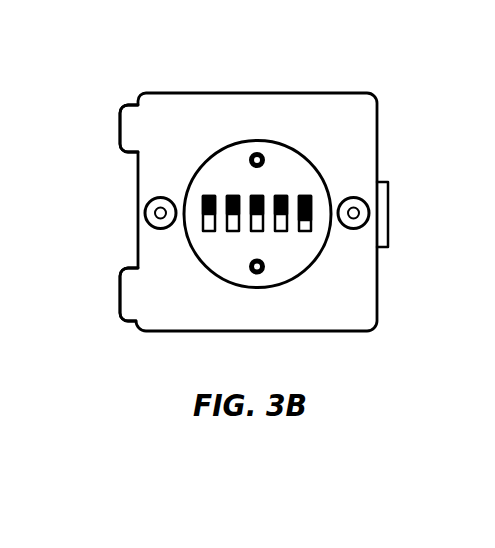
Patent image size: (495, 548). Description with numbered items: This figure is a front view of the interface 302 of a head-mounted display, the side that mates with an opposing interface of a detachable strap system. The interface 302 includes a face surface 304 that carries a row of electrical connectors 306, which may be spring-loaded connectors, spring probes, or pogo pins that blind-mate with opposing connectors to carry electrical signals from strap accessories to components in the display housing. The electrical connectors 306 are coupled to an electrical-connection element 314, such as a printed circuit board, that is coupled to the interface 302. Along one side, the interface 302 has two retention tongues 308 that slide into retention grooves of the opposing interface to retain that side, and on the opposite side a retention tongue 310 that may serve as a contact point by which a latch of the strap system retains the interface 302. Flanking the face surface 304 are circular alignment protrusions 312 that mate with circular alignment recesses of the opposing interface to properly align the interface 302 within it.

The interface 302 is at (248, 332).
The face surface 304 is at (260, 113).
The electrical connectors 306 is at (205, 195).
The retention tongues 308 is at (120, 130).
The retention tongue 310 is at (389, 210).
The alignment protrusions 312 is at (161, 230).
The electrical-connection element 314 is at (222, 257).